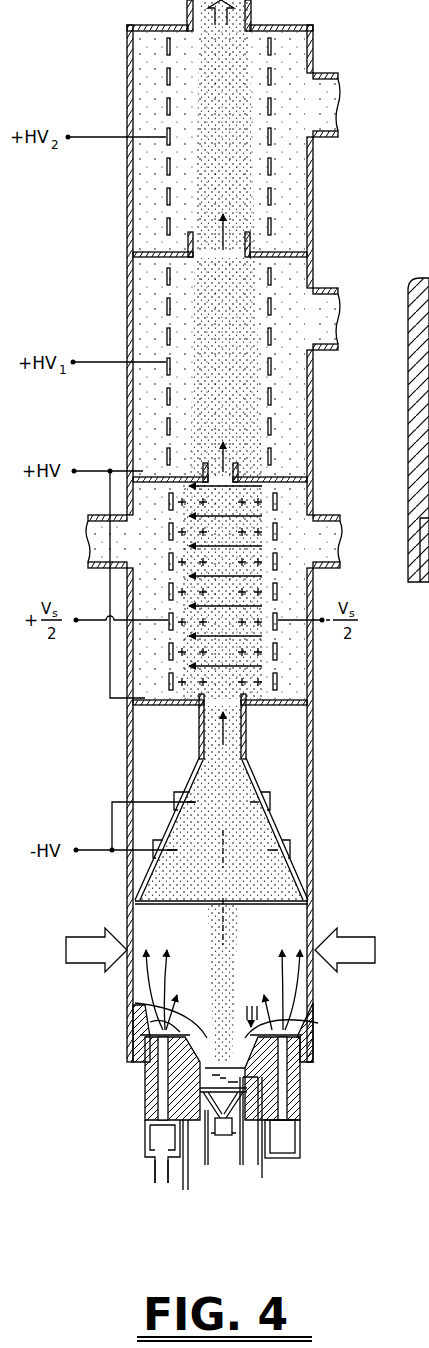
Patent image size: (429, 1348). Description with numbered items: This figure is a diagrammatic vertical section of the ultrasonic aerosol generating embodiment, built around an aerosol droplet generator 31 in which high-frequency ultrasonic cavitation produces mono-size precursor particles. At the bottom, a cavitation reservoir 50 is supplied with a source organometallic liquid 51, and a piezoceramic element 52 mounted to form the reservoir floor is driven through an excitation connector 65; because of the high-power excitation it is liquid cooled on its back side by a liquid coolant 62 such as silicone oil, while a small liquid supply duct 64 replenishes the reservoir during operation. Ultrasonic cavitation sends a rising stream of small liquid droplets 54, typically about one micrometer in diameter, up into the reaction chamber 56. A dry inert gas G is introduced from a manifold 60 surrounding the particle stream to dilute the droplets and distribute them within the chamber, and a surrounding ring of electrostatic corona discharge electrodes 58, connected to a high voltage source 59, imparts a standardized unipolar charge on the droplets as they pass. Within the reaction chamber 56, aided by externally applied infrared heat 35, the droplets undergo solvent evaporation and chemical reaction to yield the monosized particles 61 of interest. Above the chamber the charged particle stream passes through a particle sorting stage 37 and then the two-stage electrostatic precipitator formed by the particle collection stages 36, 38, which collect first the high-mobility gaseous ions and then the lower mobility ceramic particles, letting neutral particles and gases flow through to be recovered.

The aerosol droplet generator 31 is at (255, 1134).
The externally applied infrared heat 35 is at (220, 950).
The particle collection stage 36 is at (345, 260).
The particle sorting stage 37 is at (345, 487).
The particle collection stage 38 is at (345, 25).
The cavitation reservoir 50 is at (205, 1060).
The source organometallic liquid 51 is at (200, 1090).
The piezoceramic element 52 is at (243, 1078).
The liquid droplets 54 is at (135, 1003).
The reaction chamber 56 is at (241, 970).
The electrostatic corona discharge electrodes 58 is at (150, 1022).
The high voltage source 59 is at (185, 1190).
The manifold 60 is at (145, 1108).
The monosized particles 61 is at (263, 919).
The liquid coolant 62 is at (205, 1187).
The liquid supply duct 64 is at (262, 1178).
The excitation connector 65 is at (223, 1148).
The dry inert gas G is at (162, 1188).